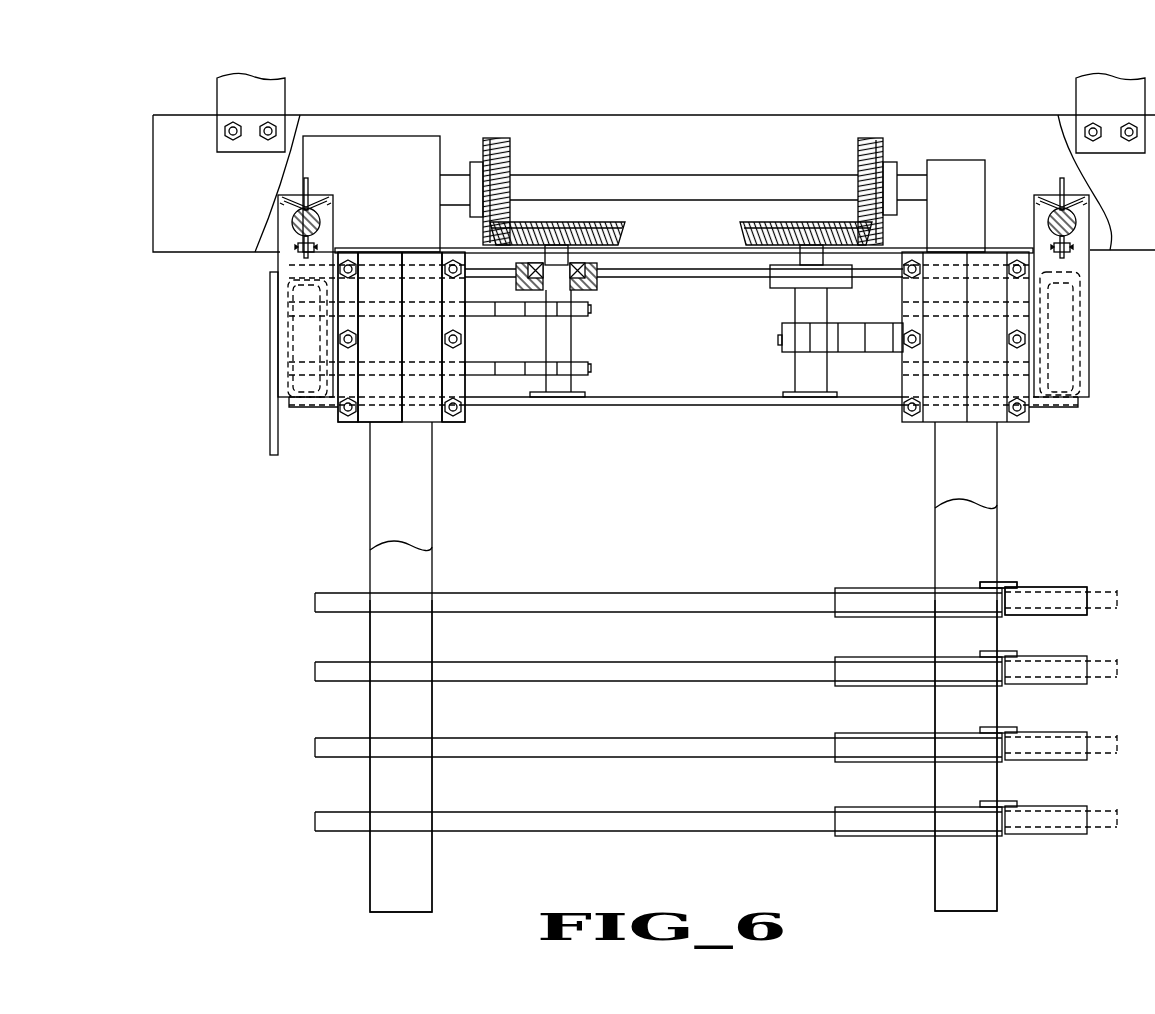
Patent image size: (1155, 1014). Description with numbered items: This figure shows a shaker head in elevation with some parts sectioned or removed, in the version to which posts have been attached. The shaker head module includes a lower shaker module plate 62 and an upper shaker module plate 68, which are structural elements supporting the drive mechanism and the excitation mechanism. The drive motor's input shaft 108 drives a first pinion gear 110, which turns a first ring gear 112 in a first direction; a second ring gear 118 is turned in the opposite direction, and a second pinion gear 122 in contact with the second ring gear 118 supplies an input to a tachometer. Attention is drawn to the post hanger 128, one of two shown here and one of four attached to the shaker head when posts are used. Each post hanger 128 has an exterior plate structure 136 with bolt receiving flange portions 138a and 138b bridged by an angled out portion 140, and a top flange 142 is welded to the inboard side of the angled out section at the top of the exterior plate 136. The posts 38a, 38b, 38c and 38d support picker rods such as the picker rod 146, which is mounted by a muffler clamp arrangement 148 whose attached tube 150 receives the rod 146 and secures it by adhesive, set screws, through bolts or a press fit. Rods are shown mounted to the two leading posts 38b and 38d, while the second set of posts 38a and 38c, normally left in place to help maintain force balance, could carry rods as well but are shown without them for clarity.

The post 38a is at (420, 535).
The post 38b is at (980, 477).
The post 38c is at (420, 640).
The post 38d is at (940, 635).
The lower shaker module plate 62 is at (690, 407).
The upper shaker module plate 68 is at (645, 277).
The input shaft 108 is at (617, 175).
The first pinion gear 110 is at (510, 157).
The first ring gear 112 is at (555, 222).
The second ring gear 118 is at (782, 223).
The second pinion gear 122 is at (863, 142).
The post hanger 128 is at (462, 383).
The exterior plate structure 136 is at (435, 423).
The bolt receiving flange portion 138a is at (455, 423).
The bolt receiving flange portion 138b is at (348, 423).
The angled out portion 140 is at (383, 423).
The top flange 142 is at (375, 252).
The picker rod 146 is at (623, 592).
The muffler clamp arrangement 148 is at (992, 582).
The attached tube 150 is at (1042, 587).